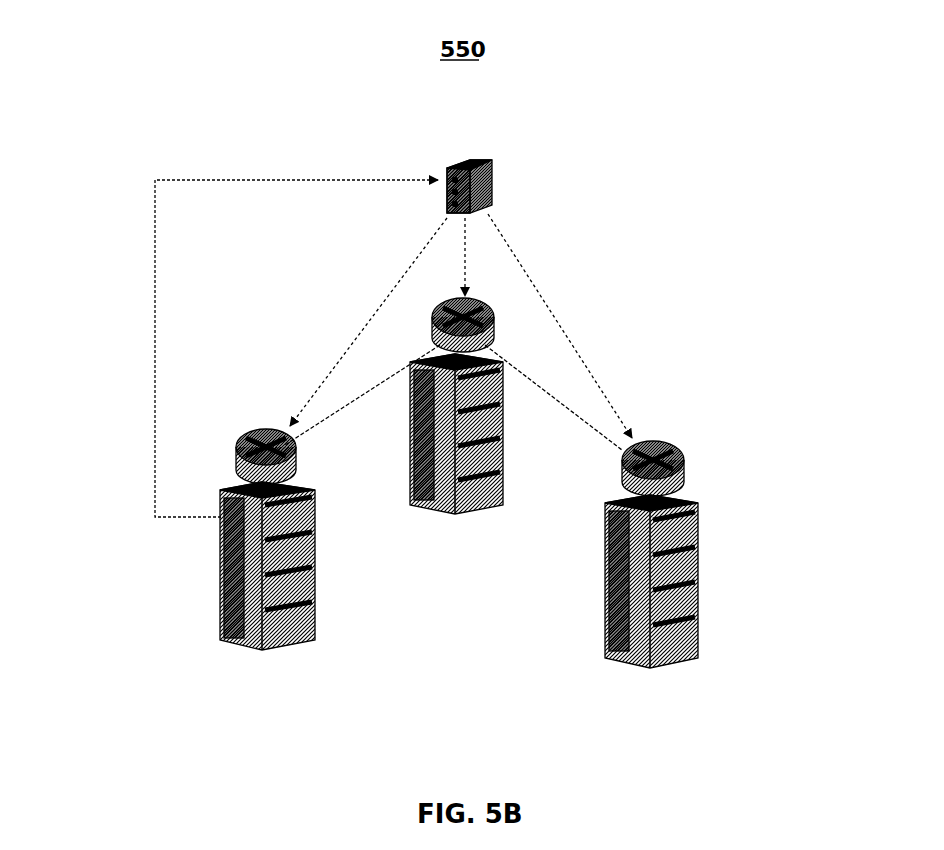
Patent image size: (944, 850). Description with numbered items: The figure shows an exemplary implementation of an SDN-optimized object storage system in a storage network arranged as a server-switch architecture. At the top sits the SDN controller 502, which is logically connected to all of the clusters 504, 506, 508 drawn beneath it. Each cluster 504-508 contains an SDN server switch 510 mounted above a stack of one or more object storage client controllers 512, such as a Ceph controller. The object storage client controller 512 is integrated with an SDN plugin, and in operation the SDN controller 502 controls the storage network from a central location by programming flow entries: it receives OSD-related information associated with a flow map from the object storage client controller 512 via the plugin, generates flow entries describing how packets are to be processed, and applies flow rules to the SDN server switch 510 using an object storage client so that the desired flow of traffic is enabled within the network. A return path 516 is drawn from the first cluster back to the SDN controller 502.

The SDN controller 502 is at (460, 157).
The cluster 504 is at (215, 575).
The cluster 506 is at (410, 438).
The cluster 508 is at (697, 582).
The SDN server switch 510 is at (655, 441).
The object storage client controller 512 is at (312, 512).
The feedback connection 516 is at (154, 322).